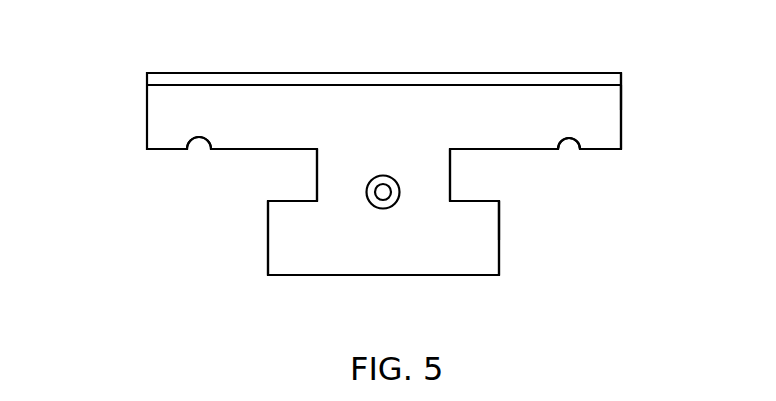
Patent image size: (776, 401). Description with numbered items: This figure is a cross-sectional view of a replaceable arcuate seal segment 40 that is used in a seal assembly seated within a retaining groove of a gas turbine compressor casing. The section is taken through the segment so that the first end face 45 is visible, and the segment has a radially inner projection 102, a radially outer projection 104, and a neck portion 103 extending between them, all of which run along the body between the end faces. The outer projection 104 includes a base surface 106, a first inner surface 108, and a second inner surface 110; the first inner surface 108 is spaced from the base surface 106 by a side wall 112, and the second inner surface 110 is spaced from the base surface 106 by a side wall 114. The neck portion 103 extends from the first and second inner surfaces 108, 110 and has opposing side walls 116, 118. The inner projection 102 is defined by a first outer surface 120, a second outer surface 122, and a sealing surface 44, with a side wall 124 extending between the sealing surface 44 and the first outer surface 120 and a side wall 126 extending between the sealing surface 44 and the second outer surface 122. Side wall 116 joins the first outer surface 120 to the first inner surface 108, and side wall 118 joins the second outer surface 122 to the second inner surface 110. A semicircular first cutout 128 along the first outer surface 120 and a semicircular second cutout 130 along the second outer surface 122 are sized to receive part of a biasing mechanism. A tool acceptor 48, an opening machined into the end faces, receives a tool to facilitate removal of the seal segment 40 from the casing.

The replaceable seal segment 40 is at (686, 110).
The sealing surface 44 is at (167, 75).
The first end face 45 is at (465, 270).
The tool acceptor 48 is at (383, 209).
The radially inner projection 102 is at (621, 143).
The neck portion 103 is at (433, 162).
The radially outer projection 104 is at (494, 250).
The base surface 106 is at (325, 275).
The first inner surface 108 is at (287, 201).
The second inner surface 110 is at (465, 201).
The side wall 112 is at (268, 230).
The side wall 114 is at (499, 218).
The side wall 116 is at (317, 167).
The side wall 118 is at (450, 180).
The first outer surface 120 is at (277, 149).
The second outer surface 122 is at (488, 149).
The side wall 124 is at (147, 109).
The side wall 126 is at (621, 92).
The first cutout 128 is at (190, 142).
The second cutout 130 is at (572, 143).